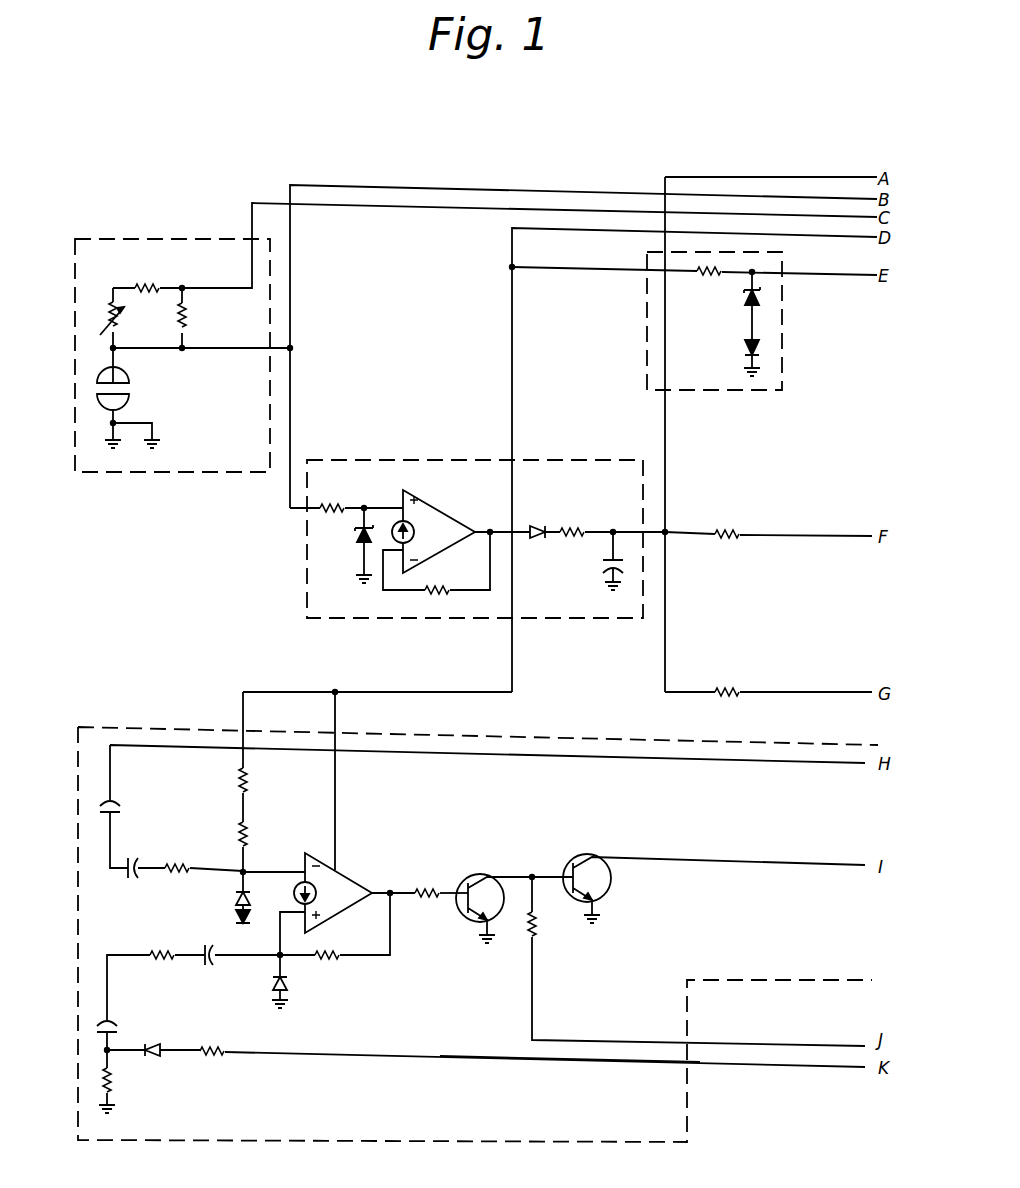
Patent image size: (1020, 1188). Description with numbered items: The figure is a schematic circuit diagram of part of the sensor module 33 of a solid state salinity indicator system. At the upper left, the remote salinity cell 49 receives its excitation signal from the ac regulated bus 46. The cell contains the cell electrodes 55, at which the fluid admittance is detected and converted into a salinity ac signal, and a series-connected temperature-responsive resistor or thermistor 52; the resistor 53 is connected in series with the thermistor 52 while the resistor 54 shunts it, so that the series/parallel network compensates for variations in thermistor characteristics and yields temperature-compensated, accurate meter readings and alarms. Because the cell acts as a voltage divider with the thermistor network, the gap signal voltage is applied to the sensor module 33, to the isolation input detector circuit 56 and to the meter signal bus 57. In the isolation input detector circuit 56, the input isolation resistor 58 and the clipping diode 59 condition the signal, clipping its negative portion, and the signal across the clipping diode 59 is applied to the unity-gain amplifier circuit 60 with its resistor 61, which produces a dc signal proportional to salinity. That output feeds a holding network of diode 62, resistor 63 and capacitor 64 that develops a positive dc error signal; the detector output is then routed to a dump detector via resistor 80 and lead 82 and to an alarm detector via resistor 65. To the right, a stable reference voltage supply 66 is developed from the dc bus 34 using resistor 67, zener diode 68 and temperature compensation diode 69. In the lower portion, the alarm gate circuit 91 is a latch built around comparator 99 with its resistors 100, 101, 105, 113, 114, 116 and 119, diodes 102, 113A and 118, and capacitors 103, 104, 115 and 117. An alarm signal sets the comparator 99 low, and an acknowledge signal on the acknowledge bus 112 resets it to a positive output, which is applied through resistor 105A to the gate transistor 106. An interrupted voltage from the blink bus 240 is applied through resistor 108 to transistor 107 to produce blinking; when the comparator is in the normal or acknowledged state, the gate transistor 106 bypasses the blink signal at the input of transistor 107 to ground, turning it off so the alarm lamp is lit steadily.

The sensor module 33 is at (410, 129).
The dc bus 34 is at (752, 177).
The ac regulated bus 46 is at (783, 158).
The salinity cell 49 is at (90, 238).
The temperature-responsive resistor (thermistor) 52 is at (108, 318).
The resistor 53 is at (149, 284).
The resistor 54 is at (175, 325).
The cell electrodes 55 is at (104, 376).
The isolation input detector circuit 56 is at (323, 457).
The meter signal bus 57 is at (294, 262).
The input isolation resistor 58 is at (332, 504).
The clipping diode 59 is at (355, 545).
The unity-gain amplifier circuit 60 is at (450, 510).
The resistor 61 is at (437, 590).
The diode 62 is at (537, 527).
The resistor 63 is at (578, 527).
The capacitor 64 is at (600, 570).
The resistor 65 is at (722, 543).
The reference voltage supply 66 is at (645, 373).
The resistor 67 is at (700, 283).
The zener diode 68 is at (744, 306).
The temperature compensation diode 69 is at (742, 352).
The resistor 80 is at (728, 684).
The lead 82 is at (858, 688).
The alarm gate circuit 91 is at (92, 726).
The comparator 99 is at (366, 880).
The resistor 100 is at (249, 789).
The resistor 101 is at (248, 846).
The diode 102 is at (254, 894).
The capacitor 103 is at (125, 809).
The capacitor 104 is at (139, 858).
The resistor 105 is at (183, 862).
The resistor 105A is at (426, 884).
The gate transistor 106 is at (483, 875).
The transistor 107 is at (598, 858).
The resistor 108 is at (535, 920).
The acknowledge bus 112 is at (430, 1050).
The resistor 113 is at (211, 1045).
The diode 113A is at (166, 1044).
The resistor 114 is at (119, 1081).
The capacitor 115 is at (121, 1025).
The resistor 116 is at (160, 948).
The capacitor 117 is at (219, 950).
The diode 118 is at (290, 985).
The resistor 119 is at (334, 950).
The blink bus 240 is at (536, 975).